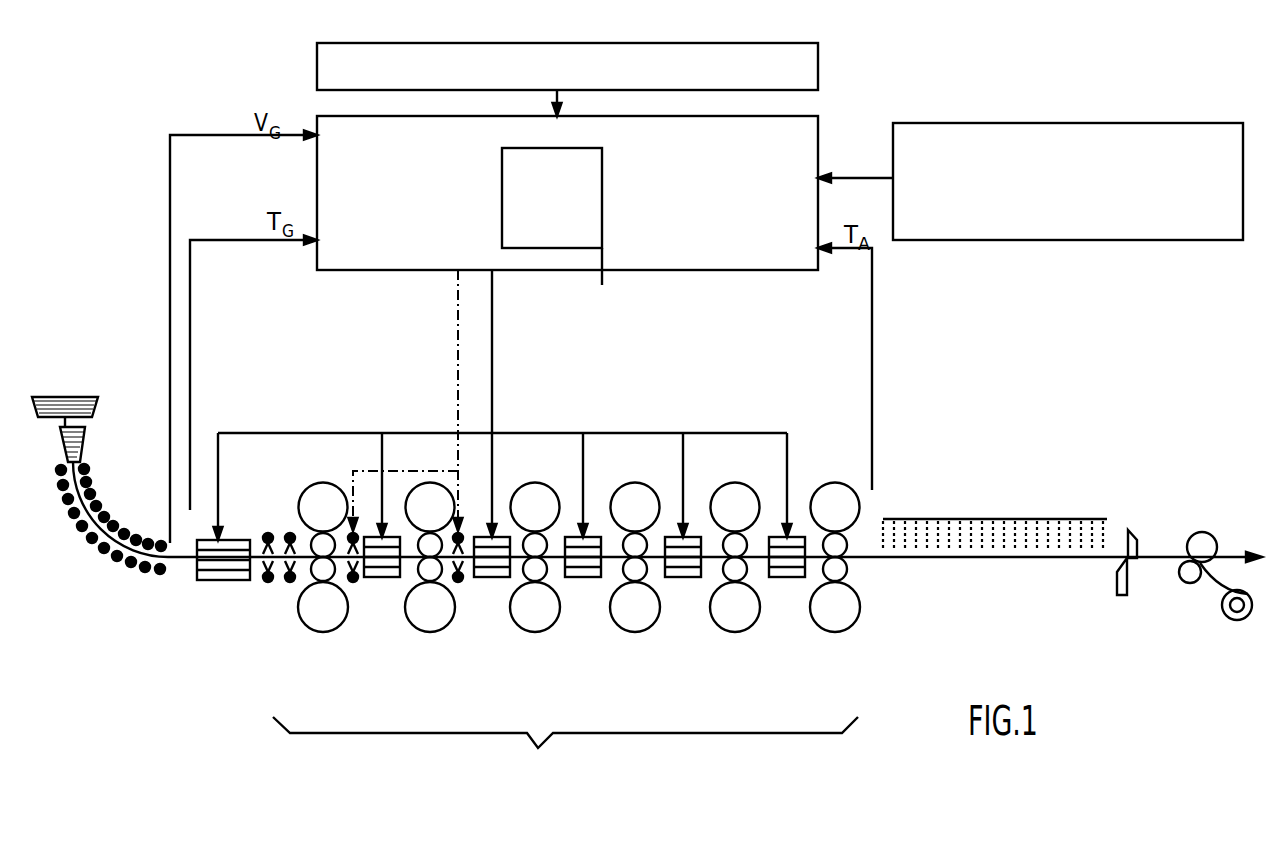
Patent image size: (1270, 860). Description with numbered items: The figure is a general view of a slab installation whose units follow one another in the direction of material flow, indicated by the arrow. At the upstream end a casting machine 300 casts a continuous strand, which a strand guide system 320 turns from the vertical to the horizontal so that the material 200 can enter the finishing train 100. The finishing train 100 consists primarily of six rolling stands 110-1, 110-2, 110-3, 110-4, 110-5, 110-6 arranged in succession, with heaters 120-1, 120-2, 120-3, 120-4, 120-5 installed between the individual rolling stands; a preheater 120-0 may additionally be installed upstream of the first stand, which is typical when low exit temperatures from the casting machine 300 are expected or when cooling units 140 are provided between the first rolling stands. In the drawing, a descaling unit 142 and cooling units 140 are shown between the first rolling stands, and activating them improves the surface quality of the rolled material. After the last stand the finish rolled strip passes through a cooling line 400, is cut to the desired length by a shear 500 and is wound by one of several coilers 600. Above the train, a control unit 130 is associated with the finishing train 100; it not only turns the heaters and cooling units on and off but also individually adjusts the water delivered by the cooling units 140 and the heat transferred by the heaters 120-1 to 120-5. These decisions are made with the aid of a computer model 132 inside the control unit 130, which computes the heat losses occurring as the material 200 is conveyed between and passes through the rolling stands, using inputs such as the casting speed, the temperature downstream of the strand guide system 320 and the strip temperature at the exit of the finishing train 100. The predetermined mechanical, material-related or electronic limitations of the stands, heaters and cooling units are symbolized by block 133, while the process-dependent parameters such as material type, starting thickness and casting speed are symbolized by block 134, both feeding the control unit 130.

The finishing train 100 is at (553, 791).
The rolling stand 110-1 is at (319, 497).
The rolling stand 110-2 is at (428, 497).
The rolling stand 110-3 is at (532, 497).
The rolling stand 110-4 is at (637, 497).
The rolling stand 110-5 is at (738, 497).
The rolling stand 110-6 is at (838, 497).
The preheater 120-0 is at (210, 580).
The heater 120-1 is at (382, 578).
The heater 120-2 is at (490, 578).
The heater 120-3 is at (585, 578).
The heater 120-4 is at (683, 578).
The heater 120-5 is at (787, 578).
The control unit 130 is at (797, 140).
The computer model 132 is at (552, 216).
The limitations 133 is at (1014, 176).
The process-dependent parameters 134 is at (570, 58).
The cooling units 140 is at (458, 583).
The descaling unit 142 is at (290, 583).
The material 200 is at (183, 559).
The casting machine 300 is at (88, 430).
The strand guide system 320 is at (92, 541).
The cooling line 400 is at (1005, 519).
The shear 500 is at (1135, 530).
The coiler 600 is at (1208, 533).